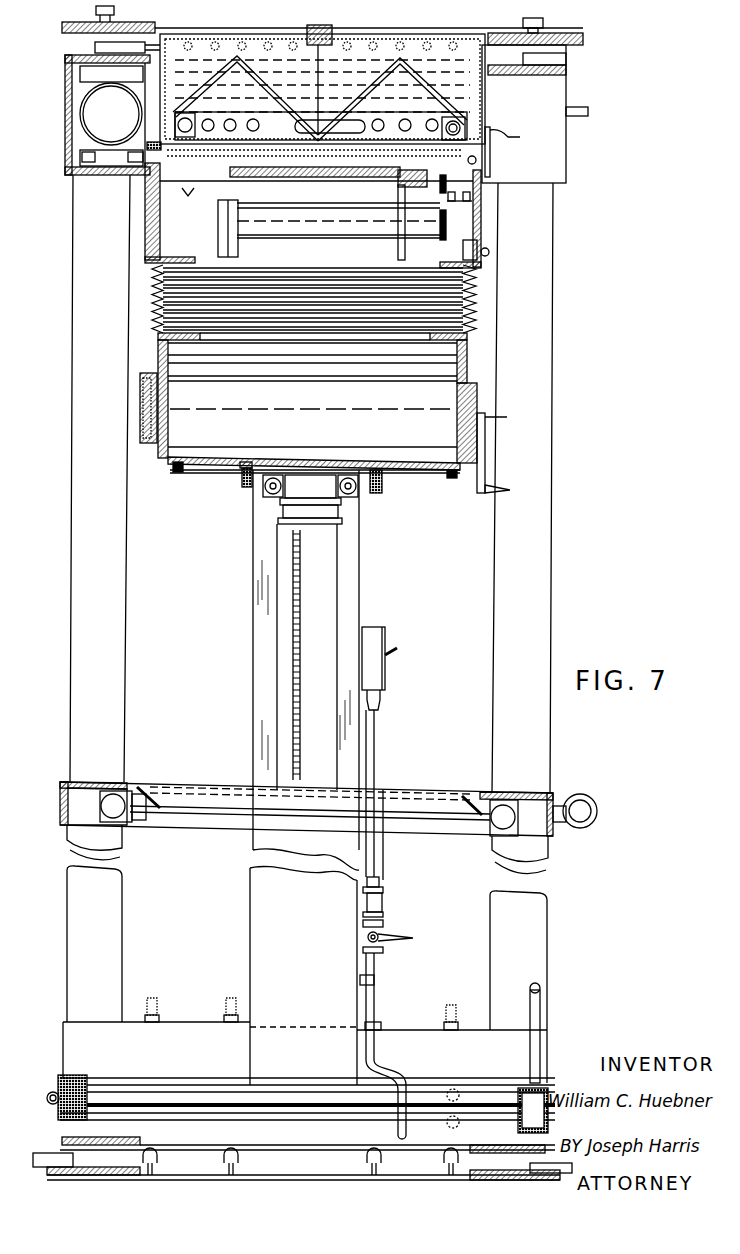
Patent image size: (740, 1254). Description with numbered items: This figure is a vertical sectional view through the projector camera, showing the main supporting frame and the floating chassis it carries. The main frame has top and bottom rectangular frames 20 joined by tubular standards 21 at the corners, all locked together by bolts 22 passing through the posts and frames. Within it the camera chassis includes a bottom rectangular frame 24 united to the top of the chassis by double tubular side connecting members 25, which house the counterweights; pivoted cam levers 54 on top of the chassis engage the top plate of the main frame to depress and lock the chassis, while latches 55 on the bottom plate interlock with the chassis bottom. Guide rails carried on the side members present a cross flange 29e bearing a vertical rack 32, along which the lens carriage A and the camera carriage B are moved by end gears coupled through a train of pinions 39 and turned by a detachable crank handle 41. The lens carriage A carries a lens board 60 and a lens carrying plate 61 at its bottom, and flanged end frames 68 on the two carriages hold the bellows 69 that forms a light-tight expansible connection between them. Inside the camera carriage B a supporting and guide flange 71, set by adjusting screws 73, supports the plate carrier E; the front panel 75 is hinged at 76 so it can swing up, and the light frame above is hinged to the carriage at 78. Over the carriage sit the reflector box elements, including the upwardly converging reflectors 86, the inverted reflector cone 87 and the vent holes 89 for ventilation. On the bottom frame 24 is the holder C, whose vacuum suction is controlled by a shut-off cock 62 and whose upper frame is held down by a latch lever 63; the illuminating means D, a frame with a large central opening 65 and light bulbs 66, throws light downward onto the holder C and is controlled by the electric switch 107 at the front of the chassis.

The rectangular frames 20 is at (189, 36).
The tubular standards 21 is at (118, 944).
The bolts 22 is at (118, 14).
The bottom rectangular frame 24 is at (62, 1142).
The side connecting members 25 is at (258, 899).
The cross flange of guide rail 29e is at (330, 580).
The rack 32 is at (297, 610).
The train of pinions 39 is at (140, 387).
The operating crank handle 41 is at (488, 467).
The pivoted cam levers 54 is at (102, 48).
The latches 55 is at (35, 1158).
The lens board 60 is at (176, 468).
The lens carrying plate 61 is at (243, 471).
The shut-off cock 62 is at (383, 950).
The latch lever 63 is at (540, 1012).
The central opening 65 is at (158, 803).
The light bulbs 66 is at (503, 822).
The flanged end frames 68 is at (163, 255).
The bellows 69 is at (163, 303).
The supporting and guide flange 71 is at (157, 110).
The adjusting screws 73 is at (328, 215).
The front wall or panel 75 is at (480, 225).
The hinge 76 is at (478, 160).
The hinge of light frame 78 is at (154, 152).
The upwardly converging reflectors 86 is at (245, 98).
The inverted reflector cone 87 is at (278, 93).
The vent holes 89 is at (268, 42).
The electric switch 107 is at (388, 672).
The lens carriage A is at (317, 405).
The camera carriage B is at (160, 227).
The holder C is at (132, 1086).
The illuminating means D is at (150, 826).
The plate carrier E is at (227, 232).